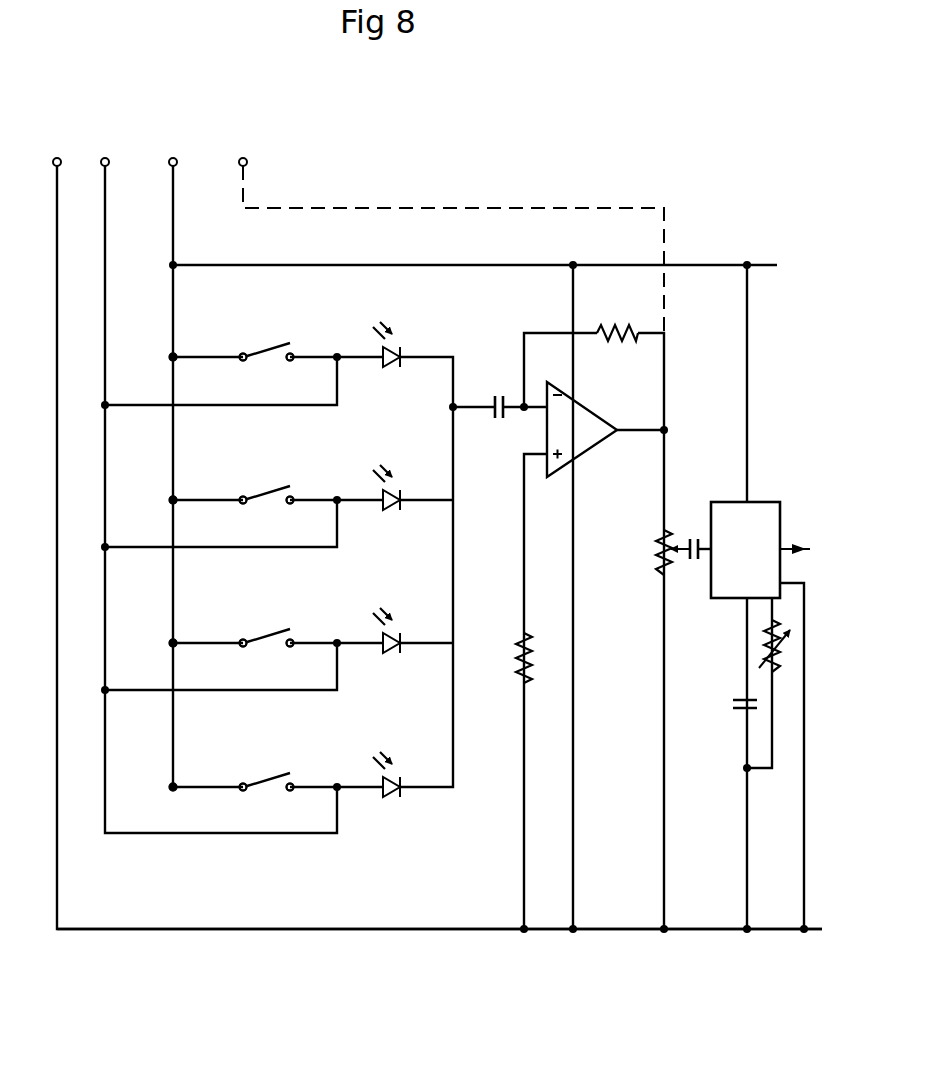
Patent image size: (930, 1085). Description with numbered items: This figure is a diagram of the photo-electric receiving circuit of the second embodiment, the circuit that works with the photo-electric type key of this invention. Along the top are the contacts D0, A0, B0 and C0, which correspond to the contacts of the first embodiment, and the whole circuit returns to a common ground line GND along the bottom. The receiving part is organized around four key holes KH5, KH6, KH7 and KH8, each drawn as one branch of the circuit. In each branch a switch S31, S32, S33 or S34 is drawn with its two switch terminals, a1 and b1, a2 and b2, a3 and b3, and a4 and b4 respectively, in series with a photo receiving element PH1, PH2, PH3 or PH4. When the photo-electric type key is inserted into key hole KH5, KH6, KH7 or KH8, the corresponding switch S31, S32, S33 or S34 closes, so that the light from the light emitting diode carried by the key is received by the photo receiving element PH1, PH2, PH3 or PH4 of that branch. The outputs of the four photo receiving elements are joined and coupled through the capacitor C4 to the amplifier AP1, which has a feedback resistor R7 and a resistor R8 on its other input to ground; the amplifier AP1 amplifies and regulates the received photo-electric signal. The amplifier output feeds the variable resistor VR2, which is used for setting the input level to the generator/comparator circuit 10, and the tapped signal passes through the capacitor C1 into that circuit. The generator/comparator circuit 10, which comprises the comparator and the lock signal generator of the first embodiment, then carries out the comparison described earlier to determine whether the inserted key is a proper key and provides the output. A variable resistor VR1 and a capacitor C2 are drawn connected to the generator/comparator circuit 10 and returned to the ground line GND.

The generator/comparator circuit 10 is at (757, 502).
The contact D0 is at (56, 148).
The contact A0 is at (105, 148).
The contact B0 is at (173, 148).
The contact C0 is at (243, 148).
The key hole KH5 is at (147, 357).
The key hole KH6 is at (147, 500).
The key hole KH7 is at (147, 643).
The key hole KH8 is at (147, 787).
The switch S31 is at (267, 338).
The switch S32 is at (267, 481).
The switch S33 is at (267, 624).
The switch S34 is at (267, 768).
The switch contact a1 is at (242, 371).
The switch contact b1 is at (292, 371).
The switch contact a2 is at (242, 514).
The switch contact b2 is at (292, 514).
The switch contact a3 is at (242, 657).
The switch contact b3 is at (292, 657).
The switch contact a4 is at (242, 801).
The switch contact b4 is at (292, 801).
The photo receiving element PH1 is at (408, 344).
The photo receiving element PH2 is at (408, 487).
The photo receiving element PH3 is at (408, 630).
The photo receiving element PH4 is at (408, 774).
The capacitor C4 is at (494, 420).
The amplifier AP1 is at (582, 429).
The resistor R7 is at (617, 323).
The resistor R8 is at (537, 658).
The variable resistor VR2 is at (653, 552).
The capacitor C1' C1 is at (689, 562).
The variable resistor VR1 is at (766, 648).
The capacitor C2 is at (732, 713).
The ground line GND is at (409, 930).